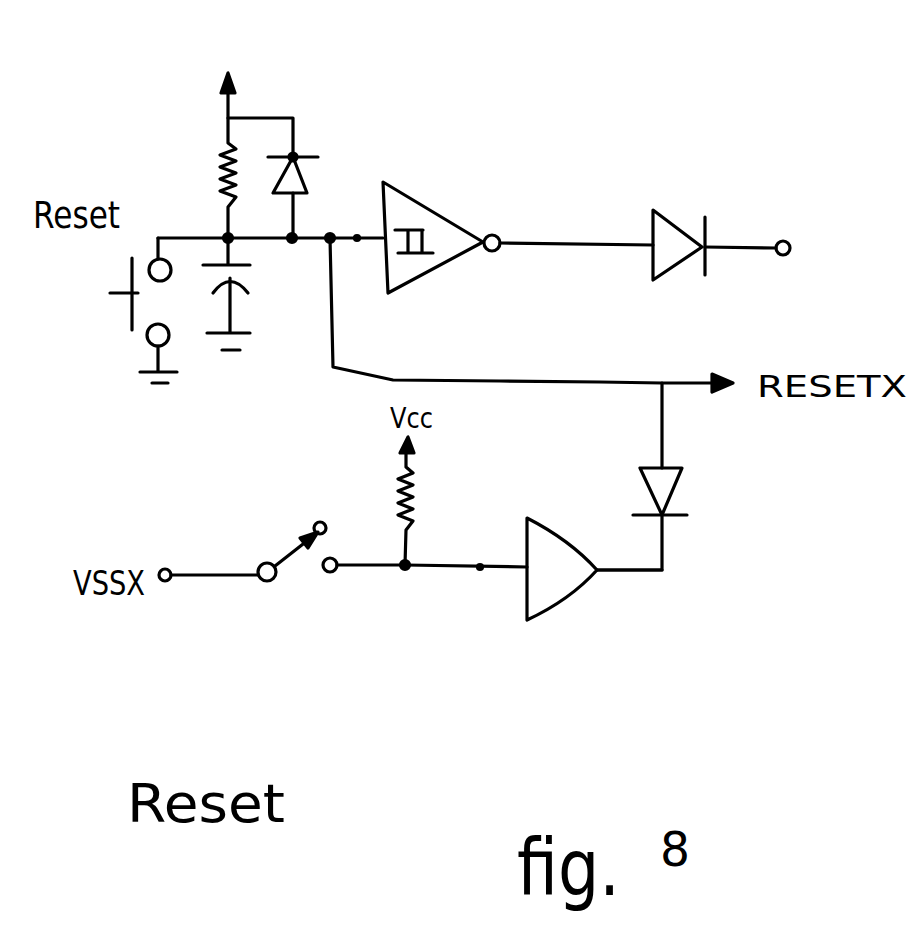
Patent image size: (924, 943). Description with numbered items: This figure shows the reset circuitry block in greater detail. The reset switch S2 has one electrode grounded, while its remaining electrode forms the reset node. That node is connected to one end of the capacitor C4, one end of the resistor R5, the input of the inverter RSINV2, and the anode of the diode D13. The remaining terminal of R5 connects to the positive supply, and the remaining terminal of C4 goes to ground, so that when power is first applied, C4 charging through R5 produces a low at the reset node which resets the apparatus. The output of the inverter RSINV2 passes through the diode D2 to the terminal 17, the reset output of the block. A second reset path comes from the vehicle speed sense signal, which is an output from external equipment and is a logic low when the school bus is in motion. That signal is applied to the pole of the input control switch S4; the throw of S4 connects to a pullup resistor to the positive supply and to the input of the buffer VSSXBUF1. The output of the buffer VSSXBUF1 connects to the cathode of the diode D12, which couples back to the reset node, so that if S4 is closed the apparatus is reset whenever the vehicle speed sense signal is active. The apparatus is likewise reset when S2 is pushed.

The reset output terminal 17 is at (847, 250).
The pull-up resistor R5 is at (230, 137).
The capacitor C4 is at (248, 294).
The diode D13 is at (332, 185).
The diode D2 is at (721, 224).
The diode D12 is at (699, 476).
The Reset switch S2 is at (125, 310).
The input control switch S4 is at (297, 575).
The inverter RSINV2 is at (470, 209).
The buffer VSSXBUF1 is at (557, 615).